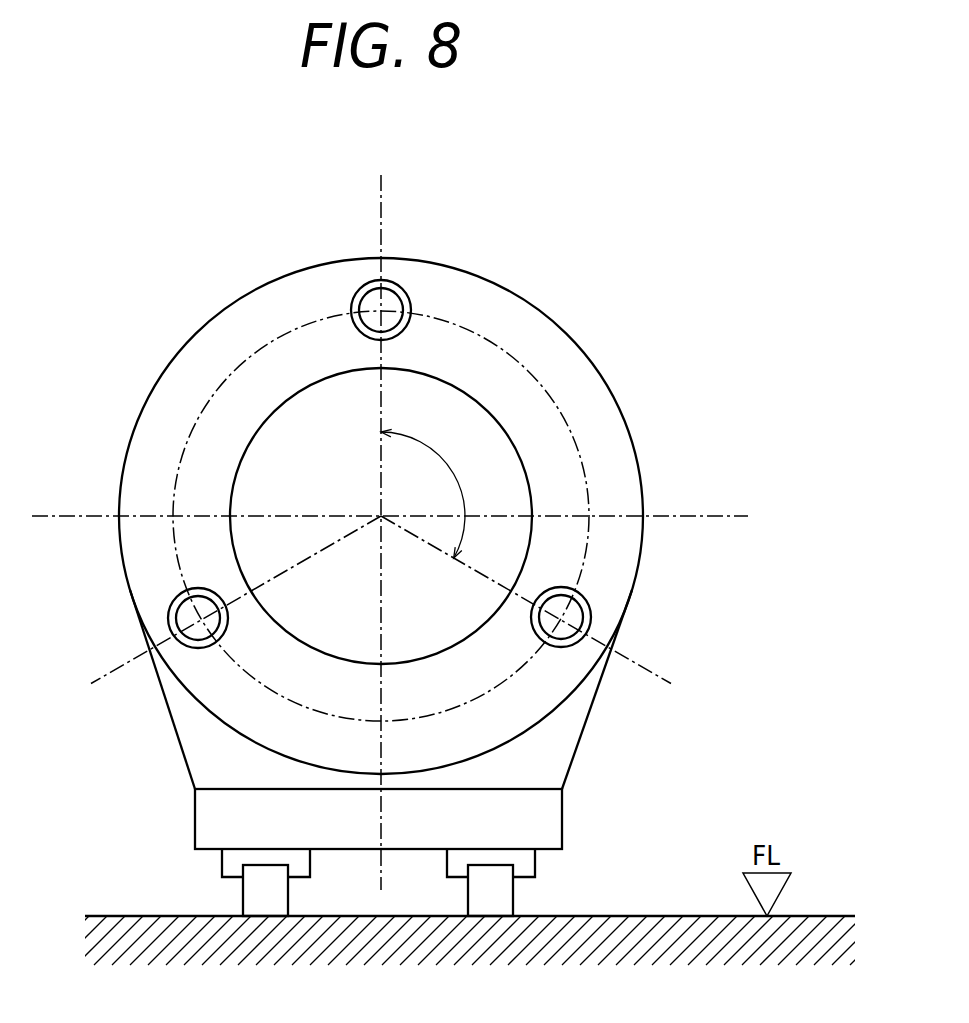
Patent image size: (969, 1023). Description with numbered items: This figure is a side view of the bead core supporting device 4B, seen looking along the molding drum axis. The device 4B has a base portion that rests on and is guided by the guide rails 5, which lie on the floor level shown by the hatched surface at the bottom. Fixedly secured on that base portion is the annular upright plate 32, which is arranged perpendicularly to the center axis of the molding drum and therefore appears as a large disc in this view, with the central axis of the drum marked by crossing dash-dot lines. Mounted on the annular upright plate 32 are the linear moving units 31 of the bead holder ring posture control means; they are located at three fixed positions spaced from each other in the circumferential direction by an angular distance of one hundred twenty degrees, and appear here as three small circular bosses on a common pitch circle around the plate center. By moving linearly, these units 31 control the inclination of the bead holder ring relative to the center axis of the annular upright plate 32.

The bead core supporting device 4B is at (550, 268).
The linear moving unit 31 is at (366, 285).
The annular upright plate 32 is at (523, 715).
The guide rail 5 is at (495, 901).